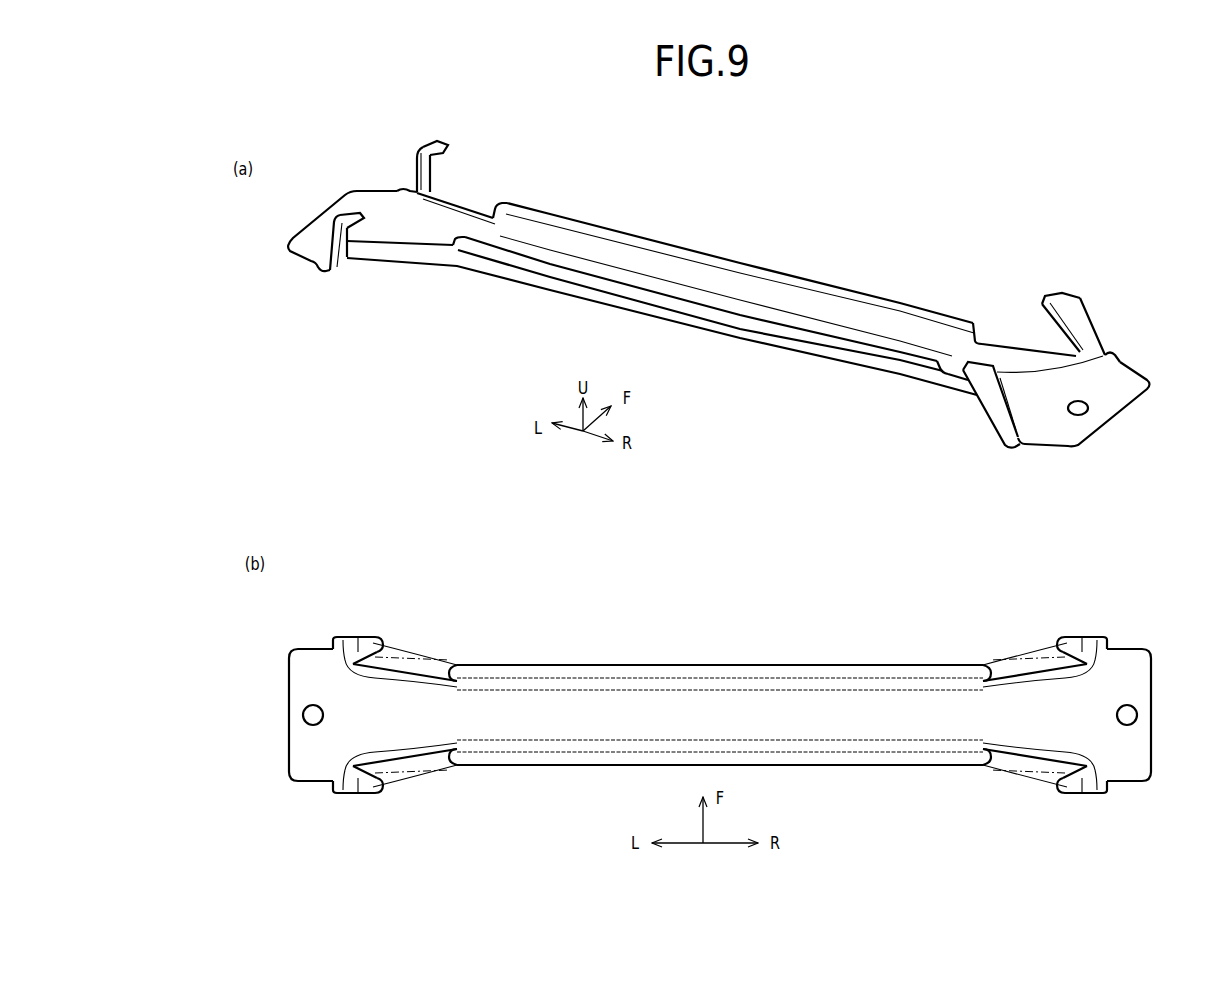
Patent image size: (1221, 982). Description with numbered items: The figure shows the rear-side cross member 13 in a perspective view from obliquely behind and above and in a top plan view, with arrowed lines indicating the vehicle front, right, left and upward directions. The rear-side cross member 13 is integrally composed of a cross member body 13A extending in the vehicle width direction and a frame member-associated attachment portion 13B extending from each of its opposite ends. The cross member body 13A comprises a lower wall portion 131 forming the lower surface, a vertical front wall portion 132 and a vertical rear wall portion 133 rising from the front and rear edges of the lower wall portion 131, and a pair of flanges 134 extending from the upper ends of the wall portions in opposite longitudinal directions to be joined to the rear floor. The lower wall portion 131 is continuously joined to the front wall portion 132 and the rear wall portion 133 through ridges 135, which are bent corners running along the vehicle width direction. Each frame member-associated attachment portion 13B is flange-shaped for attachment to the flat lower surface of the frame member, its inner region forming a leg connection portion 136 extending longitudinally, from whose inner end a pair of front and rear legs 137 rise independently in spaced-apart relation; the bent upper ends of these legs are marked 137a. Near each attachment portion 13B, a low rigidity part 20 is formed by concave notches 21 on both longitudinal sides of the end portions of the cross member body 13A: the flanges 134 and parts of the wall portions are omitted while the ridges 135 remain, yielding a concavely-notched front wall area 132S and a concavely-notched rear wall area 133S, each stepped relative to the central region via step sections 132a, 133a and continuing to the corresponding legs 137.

The rear-side cross member 13 is at (403, 351).
The cross member body 13A is at (829, 362).
The frame member-associated attachment portion 13B is at (338, 204).
The low rigidity part 20 is at (374, 262).
The concave notch 21 is at (381, 229).
The lower wall portion 131 is at (693, 296).
The front wall portion 132 is at (808, 306).
The step section 132a is at (499, 203).
The concavely-notched front wall area 132S is at (460, 208).
The rear wall portion 133 is at (781, 342).
The step section 133a is at (452, 248).
The concavely-notched rear wall area 133S is at (400, 246).
The flange 134 is at (778, 273).
The ridge 135 is at (600, 262).
The leg connection portion 136 is at (398, 192).
The leg 137 is at (316, 254).
The tab tip 137a is at (363, 197).